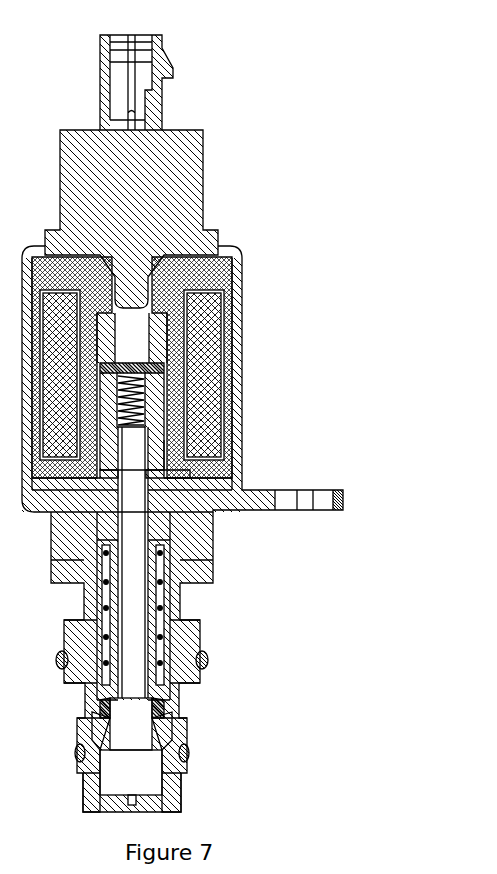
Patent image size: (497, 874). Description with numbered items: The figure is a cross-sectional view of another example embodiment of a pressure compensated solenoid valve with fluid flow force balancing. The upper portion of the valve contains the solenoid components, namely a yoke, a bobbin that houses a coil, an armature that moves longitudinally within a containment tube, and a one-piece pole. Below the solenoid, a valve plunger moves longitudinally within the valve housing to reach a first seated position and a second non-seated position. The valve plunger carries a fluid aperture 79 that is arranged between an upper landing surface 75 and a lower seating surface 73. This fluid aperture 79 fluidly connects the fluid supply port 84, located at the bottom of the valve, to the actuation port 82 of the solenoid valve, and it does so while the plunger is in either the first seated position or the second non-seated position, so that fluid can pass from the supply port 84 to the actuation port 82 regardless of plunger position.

The lower seating surface 73 is at (106, 750).
The upper landing surface 75 is at (100, 690).
The fluid aperture 79 is at (106, 712).
The actuation port 82 is at (172, 712).
The fluid supply port 84 is at (143, 790).